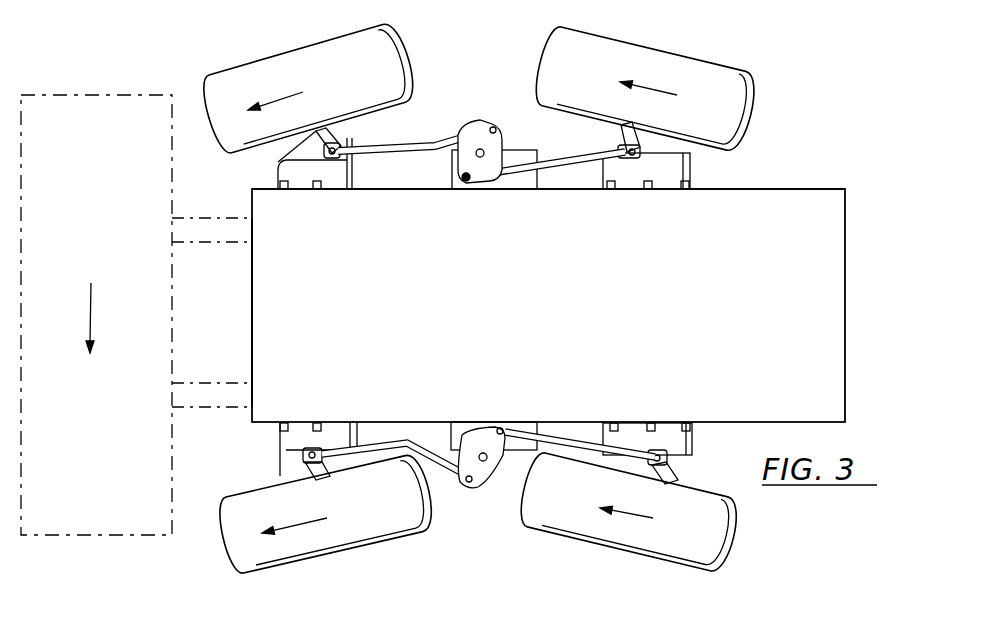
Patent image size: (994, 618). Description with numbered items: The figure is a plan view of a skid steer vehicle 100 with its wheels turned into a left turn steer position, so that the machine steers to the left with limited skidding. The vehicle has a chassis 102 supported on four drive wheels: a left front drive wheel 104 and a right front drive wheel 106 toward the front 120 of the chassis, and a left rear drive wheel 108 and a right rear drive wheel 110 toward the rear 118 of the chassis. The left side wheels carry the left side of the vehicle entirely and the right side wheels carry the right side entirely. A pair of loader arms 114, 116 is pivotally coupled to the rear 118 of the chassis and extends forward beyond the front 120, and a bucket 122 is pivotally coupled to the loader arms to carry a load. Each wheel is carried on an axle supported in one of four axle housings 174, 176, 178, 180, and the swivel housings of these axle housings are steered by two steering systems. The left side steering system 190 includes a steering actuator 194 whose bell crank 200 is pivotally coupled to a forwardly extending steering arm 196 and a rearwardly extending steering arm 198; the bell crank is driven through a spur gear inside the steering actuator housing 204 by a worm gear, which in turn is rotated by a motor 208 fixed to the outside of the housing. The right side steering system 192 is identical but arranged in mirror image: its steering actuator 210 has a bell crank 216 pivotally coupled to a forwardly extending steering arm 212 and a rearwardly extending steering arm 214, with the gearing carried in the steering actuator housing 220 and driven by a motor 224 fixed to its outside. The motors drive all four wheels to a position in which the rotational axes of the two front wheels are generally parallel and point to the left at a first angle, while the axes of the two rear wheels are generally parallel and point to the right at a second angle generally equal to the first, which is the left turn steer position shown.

The skid steer vehicle 100 is at (531, 12).
The chassis 102 is at (497, 308).
The left front drive wheel 104 is at (230, 560).
The right front drive wheel 106 is at (283, 56).
The left rear drive wheel 108 is at (740, 543).
The right rear drive wheel 110 is at (717, 70).
The loader arm 114 is at (228, 382).
The loader arm 116 is at (213, 246).
The rear of the chassis 118 is at (770, 185).
The front of the chassis 120 is at (250, 310).
The bucket 122 is at (101, 62).
The axle housing 174 is at (285, 464).
The axle housing 176 is at (277, 163).
The axle housing 178 is at (692, 455).
The right rear axle housing 180 is at (687, 167).
The left side steering system 190 is at (488, 465).
The right side steering system 192 is at (481, 135).
The steering actuator 194 is at (502, 499).
The forwardly extending steering arm 196 is at (398, 440).
The rearwardly extending steering arm 198 is at (573, 440).
The bell crank 200 is at (490, 428).
The steering actuator housing 204 is at (440, 422).
The motor 208 is at (553, 422).
The steering actuator 210 is at (502, 101).
The forwardly extending steering arm 212 is at (426, 127).
The rearwardly extending steering arm 214 is at (556, 178).
The bell crank 216 is at (455, 162).
The steering actuator housing 220 is at (497, 140).
The motor 224 is at (521, 160).